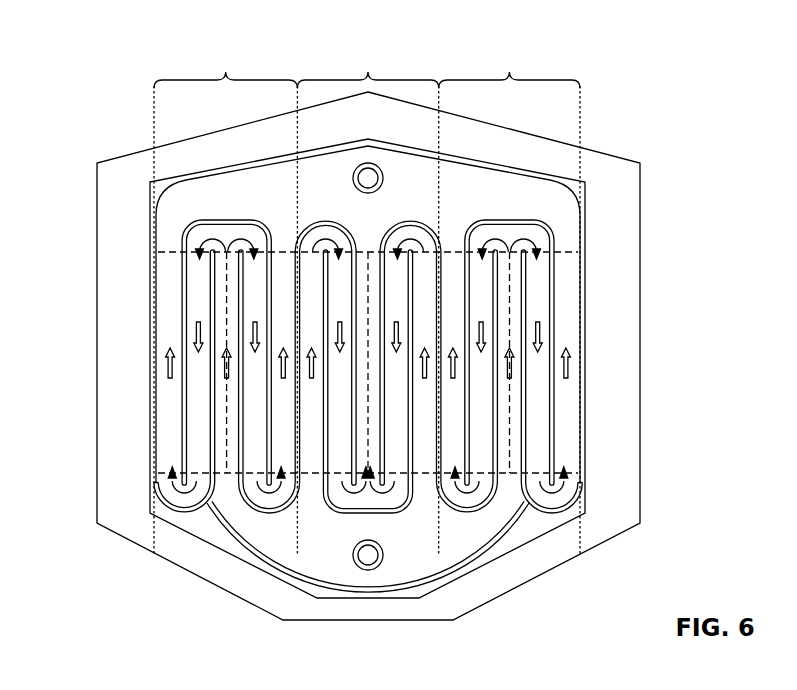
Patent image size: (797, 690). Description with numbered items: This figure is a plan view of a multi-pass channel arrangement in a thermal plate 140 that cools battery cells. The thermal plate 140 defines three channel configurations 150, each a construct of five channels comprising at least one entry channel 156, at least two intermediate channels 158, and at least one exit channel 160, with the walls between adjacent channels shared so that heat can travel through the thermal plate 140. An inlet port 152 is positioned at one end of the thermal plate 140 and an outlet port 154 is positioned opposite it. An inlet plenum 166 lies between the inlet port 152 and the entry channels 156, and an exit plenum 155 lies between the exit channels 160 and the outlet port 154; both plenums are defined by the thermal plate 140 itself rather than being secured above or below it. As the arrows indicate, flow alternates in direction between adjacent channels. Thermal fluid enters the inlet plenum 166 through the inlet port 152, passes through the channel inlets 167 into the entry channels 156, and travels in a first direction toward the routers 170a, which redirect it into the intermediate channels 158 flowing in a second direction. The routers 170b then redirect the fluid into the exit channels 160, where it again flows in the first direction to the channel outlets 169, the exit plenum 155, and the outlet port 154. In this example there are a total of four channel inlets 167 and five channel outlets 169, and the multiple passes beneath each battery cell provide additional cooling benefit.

The thermal plate 140 is at (130, 153).
The channel configuration 150 is at (226, 72).
The inlet port 152 is at (368, 555).
The outlet port 154 is at (368, 178).
The exit plenum 155 is at (520, 147).
The entry channel 156 is at (313, 397).
The intermediate channel 158 is at (340, 387).
The exit channel 160 is at (283, 313).
The inlet plenum 166 is at (468, 505).
The channel inlet 167 is at (228, 495).
The channel outlet 169 is at (283, 232).
The router 170a is at (232, 237).
The router 170b is at (185, 503).